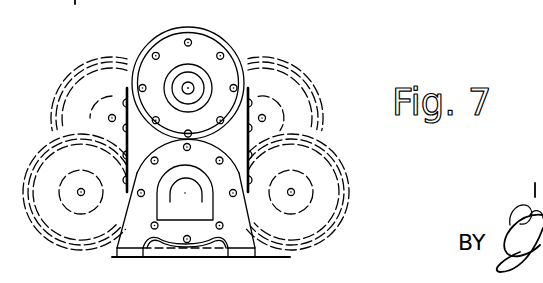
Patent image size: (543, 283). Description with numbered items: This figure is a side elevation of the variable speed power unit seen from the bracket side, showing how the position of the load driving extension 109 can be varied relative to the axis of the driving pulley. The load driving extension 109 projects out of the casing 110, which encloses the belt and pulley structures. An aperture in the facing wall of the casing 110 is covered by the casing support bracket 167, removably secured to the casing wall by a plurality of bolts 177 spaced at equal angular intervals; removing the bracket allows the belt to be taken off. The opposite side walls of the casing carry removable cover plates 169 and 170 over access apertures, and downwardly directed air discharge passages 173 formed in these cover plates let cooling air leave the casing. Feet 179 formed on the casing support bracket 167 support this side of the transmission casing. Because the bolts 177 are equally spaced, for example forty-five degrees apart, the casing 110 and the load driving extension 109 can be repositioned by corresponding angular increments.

The load driving extension 109 is at (188, 88).
The casing 110 is at (206, 30).
The casing support bracket 167 is at (139, 219).
The cover plate 169 is at (126, 88).
The cover plate 170 is at (249, 90).
The air discharge passages 173 is at (122, 156).
The bolts 177 is at (208, 146).
The feet 179 is at (114, 258).